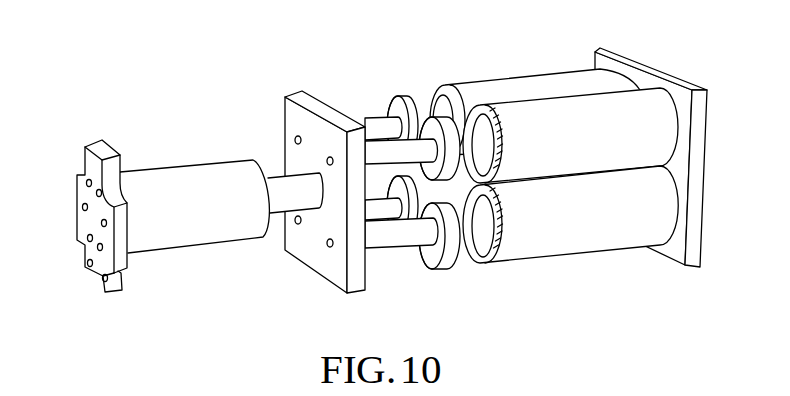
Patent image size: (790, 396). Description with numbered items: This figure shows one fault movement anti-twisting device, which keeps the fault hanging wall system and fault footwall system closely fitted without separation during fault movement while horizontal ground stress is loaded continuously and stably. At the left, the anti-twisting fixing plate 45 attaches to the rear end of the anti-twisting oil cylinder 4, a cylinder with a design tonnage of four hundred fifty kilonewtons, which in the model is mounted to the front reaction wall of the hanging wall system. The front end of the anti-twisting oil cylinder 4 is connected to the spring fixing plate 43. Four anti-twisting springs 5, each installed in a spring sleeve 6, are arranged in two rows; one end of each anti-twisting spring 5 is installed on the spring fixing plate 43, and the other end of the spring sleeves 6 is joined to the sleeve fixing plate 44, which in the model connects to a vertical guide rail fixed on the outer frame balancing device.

The anti-twisting oil cylinder 4 is at (192, 183).
The anti-twisting spring 5 is at (443, 110).
The spring sleeve 6 is at (562, 102).
The spring fixing plate 43 is at (323, 133).
The sleeve fixing plate 44 is at (642, 73).
The anti-twisting fixing plate 45 is at (106, 176).